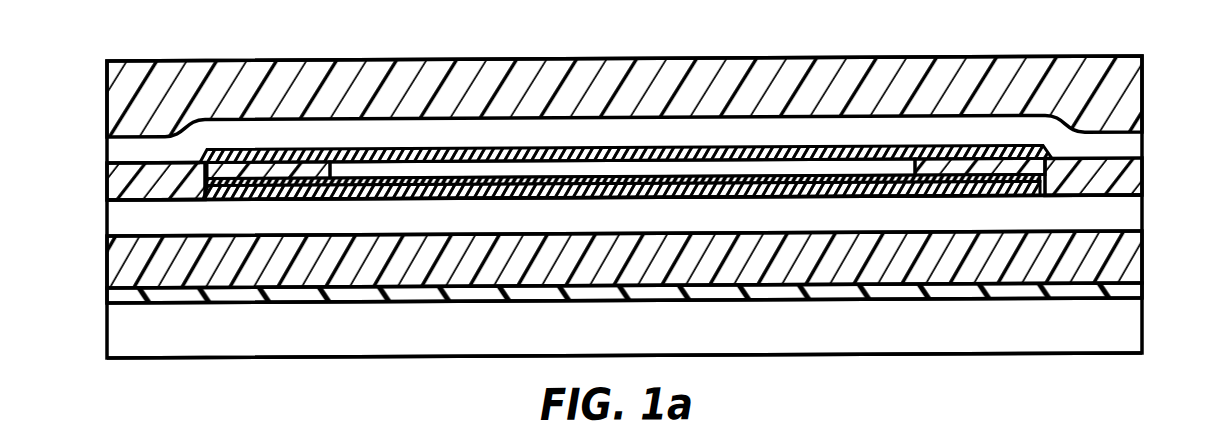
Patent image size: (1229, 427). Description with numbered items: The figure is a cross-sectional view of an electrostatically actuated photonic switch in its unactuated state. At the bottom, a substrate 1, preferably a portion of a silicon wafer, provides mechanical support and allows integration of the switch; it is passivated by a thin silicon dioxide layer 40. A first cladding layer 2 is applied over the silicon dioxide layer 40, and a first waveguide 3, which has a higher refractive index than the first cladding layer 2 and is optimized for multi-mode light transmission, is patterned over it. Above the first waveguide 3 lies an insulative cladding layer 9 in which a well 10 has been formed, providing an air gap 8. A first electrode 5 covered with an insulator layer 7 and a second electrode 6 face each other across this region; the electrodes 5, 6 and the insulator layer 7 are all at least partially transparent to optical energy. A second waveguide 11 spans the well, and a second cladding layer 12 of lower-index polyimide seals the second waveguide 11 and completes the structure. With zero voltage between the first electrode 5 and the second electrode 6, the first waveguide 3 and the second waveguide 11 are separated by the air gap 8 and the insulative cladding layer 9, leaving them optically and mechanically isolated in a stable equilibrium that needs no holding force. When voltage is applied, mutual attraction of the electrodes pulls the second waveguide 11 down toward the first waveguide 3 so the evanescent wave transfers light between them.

The substrate 1 is at (1110, 321).
The first cladding layer 2 is at (1120, 265).
The first waveguide 3 is at (1117, 218).
The first electrode 5 is at (233, 191).
The second electrode 6 is at (270, 167).
The insulator layer 7 is at (390, 182).
The air gap 8 is at (801, 170).
The insulative cladding layer 9 is at (125, 188).
The well 10 is at (305, 158).
The second waveguide 11 is at (122, 150).
The second cladding layer 12 is at (1117, 89).
The silicon dioxide layer 40 is at (1120, 293).